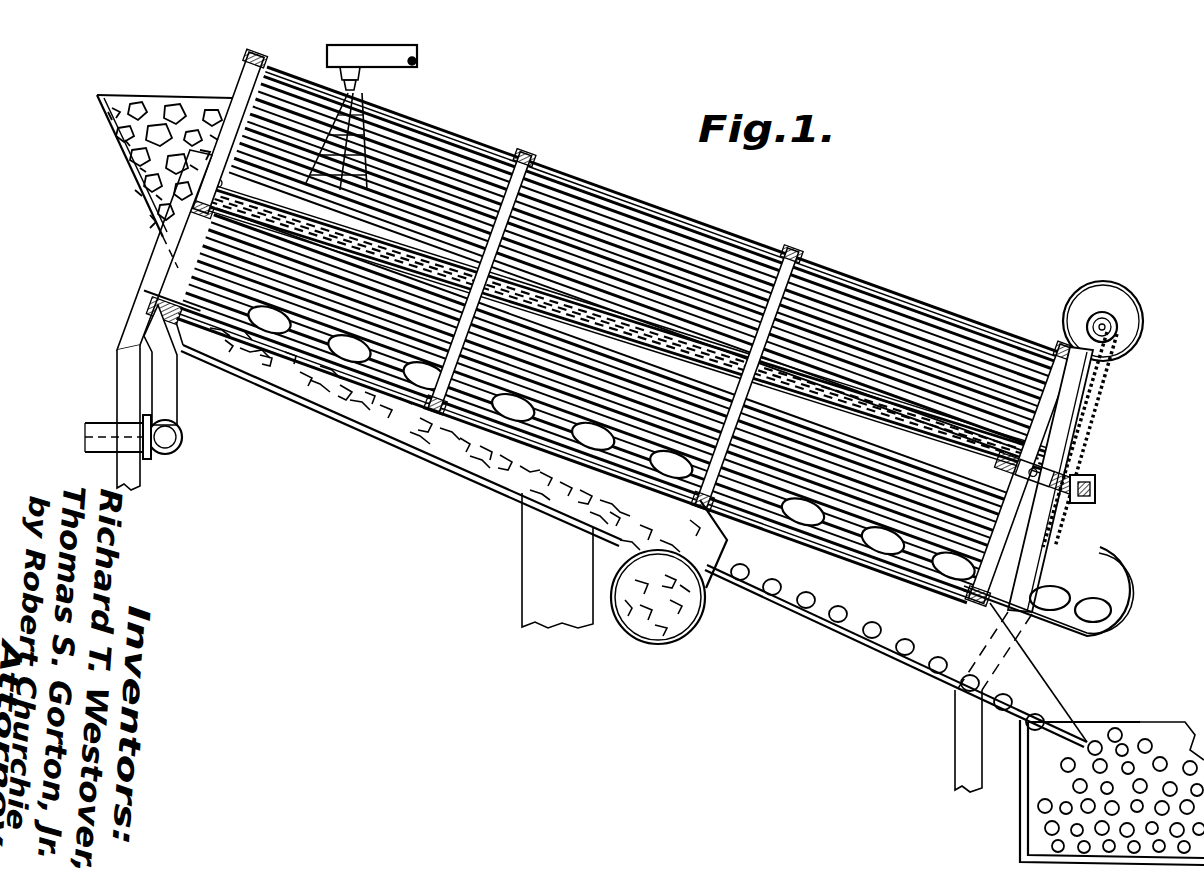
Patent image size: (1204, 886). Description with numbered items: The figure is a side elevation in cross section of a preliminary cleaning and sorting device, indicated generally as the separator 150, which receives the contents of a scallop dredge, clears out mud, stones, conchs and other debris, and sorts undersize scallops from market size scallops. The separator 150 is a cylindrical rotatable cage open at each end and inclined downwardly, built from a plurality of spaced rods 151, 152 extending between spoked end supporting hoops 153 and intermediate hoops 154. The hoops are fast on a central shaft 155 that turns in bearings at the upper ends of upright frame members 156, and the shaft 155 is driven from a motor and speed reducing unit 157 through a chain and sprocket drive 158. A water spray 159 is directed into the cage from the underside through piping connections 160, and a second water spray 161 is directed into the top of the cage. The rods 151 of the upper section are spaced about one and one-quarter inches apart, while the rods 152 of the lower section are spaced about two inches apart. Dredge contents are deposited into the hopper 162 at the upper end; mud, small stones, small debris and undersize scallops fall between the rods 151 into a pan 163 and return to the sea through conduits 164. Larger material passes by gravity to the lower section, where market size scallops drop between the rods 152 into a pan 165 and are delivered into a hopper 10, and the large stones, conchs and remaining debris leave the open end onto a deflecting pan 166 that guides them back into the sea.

The hopper 10 is at (1022, 832).
The separator 150 is at (568, 169).
The rods 151 is at (428, 143).
The rods 152 is at (915, 310).
The spoked end supporting hoops 153 is at (300, 44).
The intermediate hoops 154 is at (531, 158).
The central shaft 155 is at (817, 398).
The upright frame members 156 is at (153, 267).
The motor and speed reducing unit 157 is at (1120, 320).
The chain and sprocket drive 158 is at (1108, 400).
The water spray 159 is at (165, 318).
The piping connections 160 is at (160, 387).
The water spray 161 is at (362, 85).
The hopper 162 is at (120, 161).
The pan 163 is at (377, 440).
The conduits 164 is at (666, 641).
The pan 165 is at (820, 606).
The deflecting pan 166 is at (1138, 580).